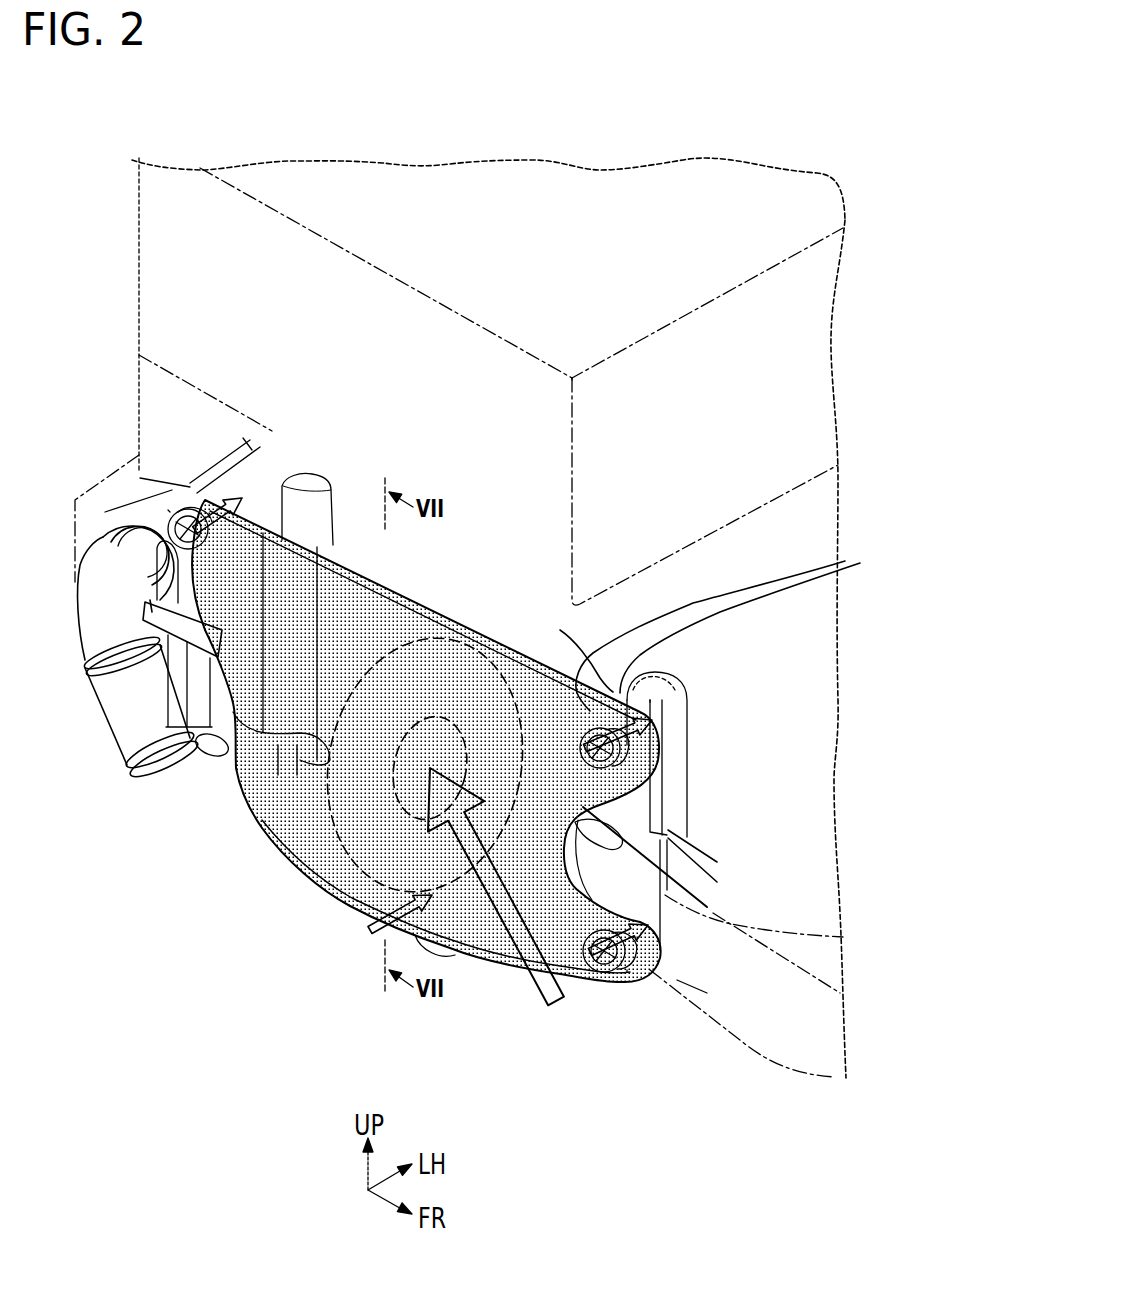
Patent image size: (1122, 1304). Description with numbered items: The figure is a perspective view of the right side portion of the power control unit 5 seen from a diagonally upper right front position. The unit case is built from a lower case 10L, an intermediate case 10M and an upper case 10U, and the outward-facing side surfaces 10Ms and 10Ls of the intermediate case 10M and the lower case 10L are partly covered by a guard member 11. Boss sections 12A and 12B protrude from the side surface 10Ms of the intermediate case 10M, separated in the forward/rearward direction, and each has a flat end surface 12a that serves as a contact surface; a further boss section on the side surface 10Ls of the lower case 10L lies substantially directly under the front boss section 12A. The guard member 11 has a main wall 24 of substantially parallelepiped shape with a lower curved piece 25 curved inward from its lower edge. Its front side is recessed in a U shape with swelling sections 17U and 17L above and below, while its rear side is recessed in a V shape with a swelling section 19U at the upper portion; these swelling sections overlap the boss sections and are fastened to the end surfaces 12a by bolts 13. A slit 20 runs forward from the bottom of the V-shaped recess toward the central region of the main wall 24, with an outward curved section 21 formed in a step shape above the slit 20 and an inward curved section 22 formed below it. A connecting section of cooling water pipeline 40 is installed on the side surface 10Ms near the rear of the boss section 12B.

The power control unit 5 is at (845, 306).
The upper case 10U is at (804, 413).
The intermediate case 10M is at (803, 840).
The side surface of the intermediate case 10Ms is at (680, 793).
The lower case 10L is at (713, 970).
The side surface of the lower case 10Ls is at (680, 953).
The guard member 11 is at (294, 866).
The end surface 12a is at (186, 510).
The boss section 12A is at (791, 724).
The boss section 12B is at (116, 406).
The bolt 13 is at (188, 508).
The swelling section 17U is at (845, 561).
The swelling section 17L is at (587, 968).
The swelling section 19U is at (110, 562).
The slit 20 is at (298, 762).
The outward curved section 21 is at (291, 543).
The inward curved section 22 is at (262, 858).
The main wall 24 is at (348, 872).
The lower curved piece 25 is at (447, 934).
The connecting section of cooling water pipeline 40 is at (124, 712).